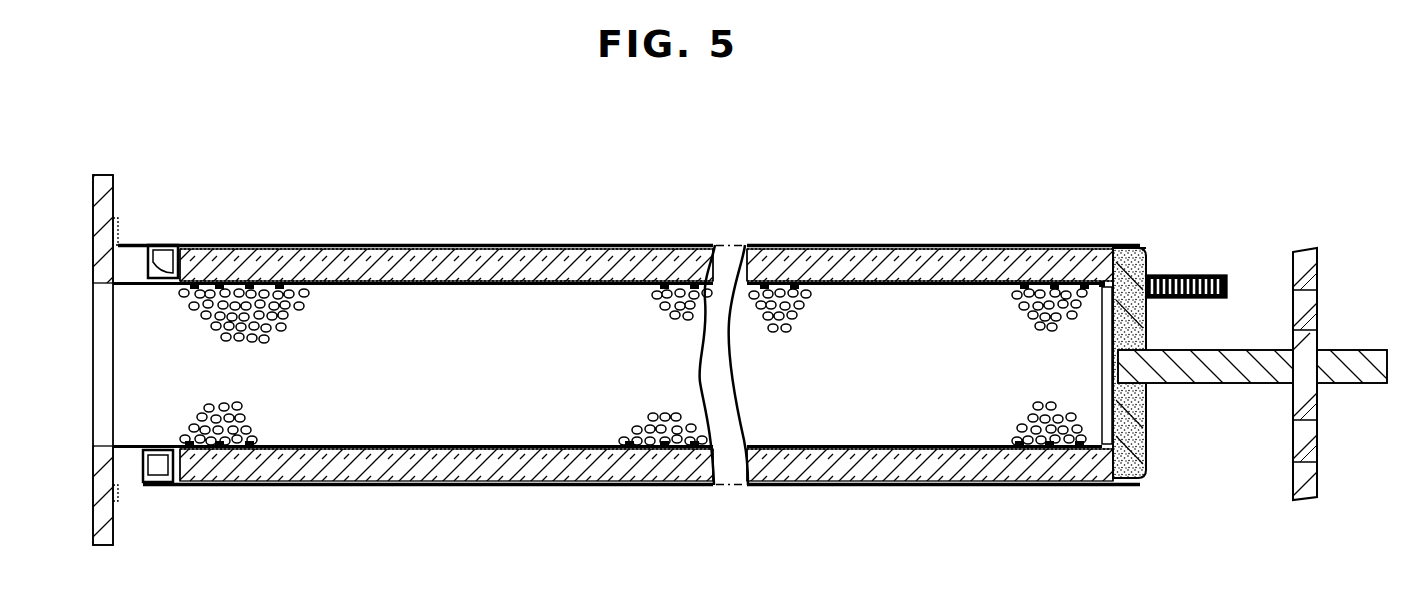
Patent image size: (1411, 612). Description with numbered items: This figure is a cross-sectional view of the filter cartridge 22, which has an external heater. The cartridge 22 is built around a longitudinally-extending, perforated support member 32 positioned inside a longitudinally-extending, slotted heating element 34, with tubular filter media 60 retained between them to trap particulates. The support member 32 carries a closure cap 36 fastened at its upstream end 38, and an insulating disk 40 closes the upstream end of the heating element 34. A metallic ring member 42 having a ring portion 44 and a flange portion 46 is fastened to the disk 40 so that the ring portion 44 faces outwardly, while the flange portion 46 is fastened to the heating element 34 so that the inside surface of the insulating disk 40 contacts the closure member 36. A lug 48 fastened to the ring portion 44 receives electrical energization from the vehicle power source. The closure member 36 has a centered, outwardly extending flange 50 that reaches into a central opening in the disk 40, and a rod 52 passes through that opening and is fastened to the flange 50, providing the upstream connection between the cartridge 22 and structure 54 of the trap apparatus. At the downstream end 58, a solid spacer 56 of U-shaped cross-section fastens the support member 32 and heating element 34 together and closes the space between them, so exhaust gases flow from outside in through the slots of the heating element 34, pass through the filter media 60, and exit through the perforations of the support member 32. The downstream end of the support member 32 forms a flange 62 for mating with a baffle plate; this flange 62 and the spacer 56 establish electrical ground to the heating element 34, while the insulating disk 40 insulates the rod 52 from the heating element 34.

The filter cartridge 22 is at (331, 540).
The support member 32 is at (858, 451).
The heating element 34 is at (532, 473).
The closure cap 36 is at (1110, 428).
The upstream end 38 is at (1013, 312).
The insulating disk 40 is at (1148, 408).
The metallic ring member 42 is at (1147, 254).
The ring portion 44 is at (1147, 460).
The flange portion 46 is at (1137, 484).
The lug 48 is at (1197, 275).
The flange 50 is at (1150, 327).
The rod 52 is at (1258, 386).
The structure 54 is at (1320, 268).
The solid spacer 56 is at (149, 246).
The downstream end 58 is at (147, 382).
The filter media 60 is at (305, 268).
The flange 62 is at (112, 502).